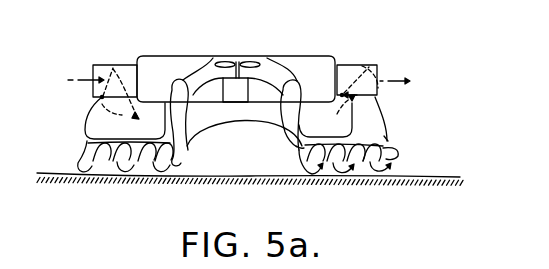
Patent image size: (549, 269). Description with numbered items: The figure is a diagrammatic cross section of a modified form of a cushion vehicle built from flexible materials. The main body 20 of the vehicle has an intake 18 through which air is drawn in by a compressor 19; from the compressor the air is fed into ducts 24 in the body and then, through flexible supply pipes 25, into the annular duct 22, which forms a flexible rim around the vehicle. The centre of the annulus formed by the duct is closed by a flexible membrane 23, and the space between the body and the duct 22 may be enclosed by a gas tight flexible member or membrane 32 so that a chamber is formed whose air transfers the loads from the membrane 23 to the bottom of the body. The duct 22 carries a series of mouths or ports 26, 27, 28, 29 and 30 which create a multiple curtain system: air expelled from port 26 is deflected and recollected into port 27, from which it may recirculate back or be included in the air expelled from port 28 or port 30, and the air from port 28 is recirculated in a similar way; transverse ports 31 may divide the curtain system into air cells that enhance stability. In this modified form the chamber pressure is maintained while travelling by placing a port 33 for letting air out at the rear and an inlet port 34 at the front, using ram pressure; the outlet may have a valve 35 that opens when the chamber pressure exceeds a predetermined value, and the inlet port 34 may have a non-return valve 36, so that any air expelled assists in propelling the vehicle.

The intake 18 is at (213, 58).
The compressor 19 is at (246, 63).
The main body 20 is at (330, 57).
The annular duct 22 is at (387, 141).
The flexible membrane 23 is at (267, 128).
The ducts 24 is at (176, 87).
The flexible supply pipes 25 is at (278, 108).
The port 26 is at (303, 147).
The port 27 is at (305, 170).
The port 28 is at (340, 170).
The port 29 is at (367, 170).
The port 30 is at (392, 161).
The transverse ports 31 is at (125, 156).
The gas tight flexible member or membrane 32 is at (85, 131).
The port 33 is at (378, 70).
The inlet port 34 is at (93, 67).
The valve 35 is at (376, 98).
The non-return valve 36 is at (100, 98).